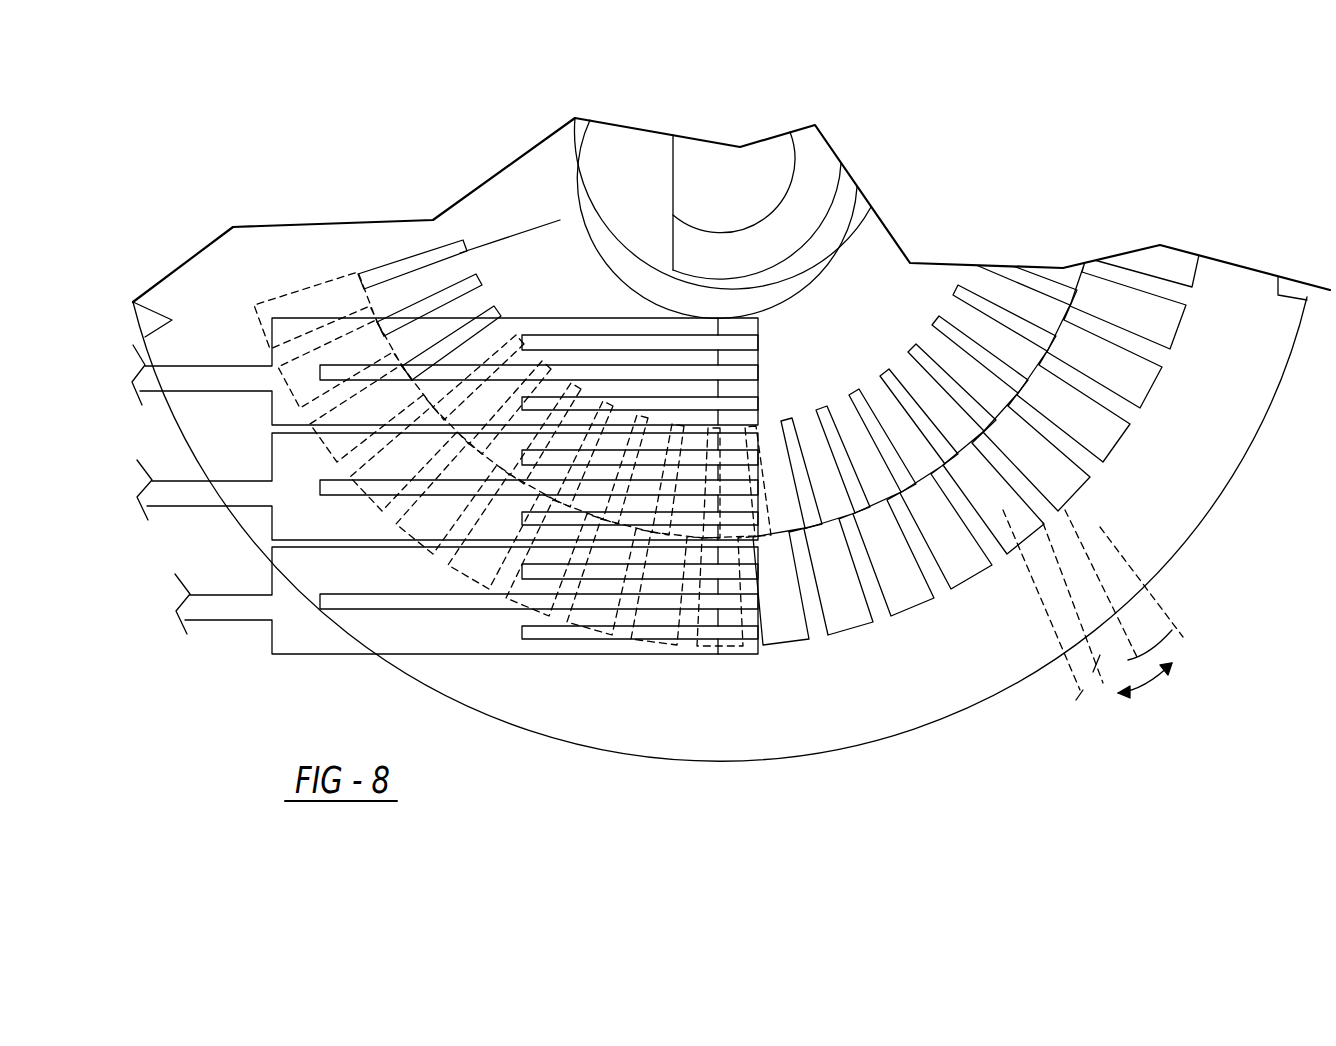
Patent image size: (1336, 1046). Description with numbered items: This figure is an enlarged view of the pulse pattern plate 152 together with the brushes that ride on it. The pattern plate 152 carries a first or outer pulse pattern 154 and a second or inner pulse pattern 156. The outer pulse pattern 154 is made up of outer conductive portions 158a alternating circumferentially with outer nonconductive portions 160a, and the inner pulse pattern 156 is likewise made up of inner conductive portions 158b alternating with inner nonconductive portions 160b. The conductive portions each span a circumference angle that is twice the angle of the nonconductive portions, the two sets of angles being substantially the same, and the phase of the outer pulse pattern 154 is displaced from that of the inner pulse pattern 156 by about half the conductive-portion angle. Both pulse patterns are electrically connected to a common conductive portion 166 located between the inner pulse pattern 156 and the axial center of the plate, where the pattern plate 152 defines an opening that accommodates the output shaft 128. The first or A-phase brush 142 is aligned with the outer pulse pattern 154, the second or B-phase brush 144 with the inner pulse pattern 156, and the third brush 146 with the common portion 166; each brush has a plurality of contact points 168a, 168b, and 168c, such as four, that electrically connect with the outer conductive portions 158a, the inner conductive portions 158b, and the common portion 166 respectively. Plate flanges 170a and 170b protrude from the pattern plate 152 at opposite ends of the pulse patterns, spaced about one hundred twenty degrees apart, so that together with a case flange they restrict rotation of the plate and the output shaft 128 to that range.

The output shaft 128 is at (740, 178).
The A-phase brush 142 is at (223, 610).
The B-phase brush 144 is at (188, 492).
The third brush 146 is at (225, 380).
The pattern plate 152 is at (700, 678).
The outer pulse pattern 154 is at (1097, 472).
The inner pulse pattern 156 is at (898, 358).
The outer conductive portions 158a is at (853, 480).
The inner conductive portions 158b is at (822, 480).
The outer nonconductive portions 160a is at (847, 600).
The inner nonconductive portions 160b is at (872, 585).
The common conductive portion 166 is at (922, 295).
The contact points 168a is at (753, 647).
The contact points 168b is at (740, 443).
The contact points 168c is at (752, 327).
The plate flange 170a is at (155, 307).
The plate flange 170b is at (1322, 400).